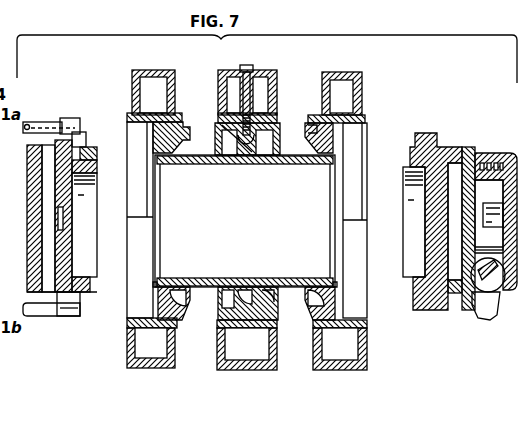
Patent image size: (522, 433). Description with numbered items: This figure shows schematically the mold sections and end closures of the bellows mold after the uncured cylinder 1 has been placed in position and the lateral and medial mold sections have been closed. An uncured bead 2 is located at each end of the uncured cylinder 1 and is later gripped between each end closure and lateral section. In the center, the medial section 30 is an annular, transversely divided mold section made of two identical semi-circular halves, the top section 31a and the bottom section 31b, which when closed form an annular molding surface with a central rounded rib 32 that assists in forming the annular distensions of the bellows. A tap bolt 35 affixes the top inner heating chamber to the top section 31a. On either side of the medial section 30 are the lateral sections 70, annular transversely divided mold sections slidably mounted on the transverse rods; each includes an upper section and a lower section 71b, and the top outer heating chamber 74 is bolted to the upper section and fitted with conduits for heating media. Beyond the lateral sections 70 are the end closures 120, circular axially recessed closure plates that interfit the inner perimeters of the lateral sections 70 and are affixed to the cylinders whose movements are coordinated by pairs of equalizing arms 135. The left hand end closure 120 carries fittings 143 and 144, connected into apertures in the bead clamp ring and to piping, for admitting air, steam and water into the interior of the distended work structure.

The uncured cylinder 1 is at (227, 163).
The uncured bead 2 is at (160, 164).
The medial section 30 is at (263, 72).
The top section 31a is at (268, 143).
The bottom section 31b is at (217, 318).
The central rounded rib 32 is at (258, 163).
The tap bolt 35 is at (243, 64).
The lateral section 70 is at (199, 128).
The lower section 71b is at (162, 308).
The top outer heating chamber 74 is at (360, 98).
The end closure 120 is at (420, 138).
The equalizing arm 135 is at (478, 318).
The fitting 143 is at (40, 128).
The fitting 144 is at (33, 313).